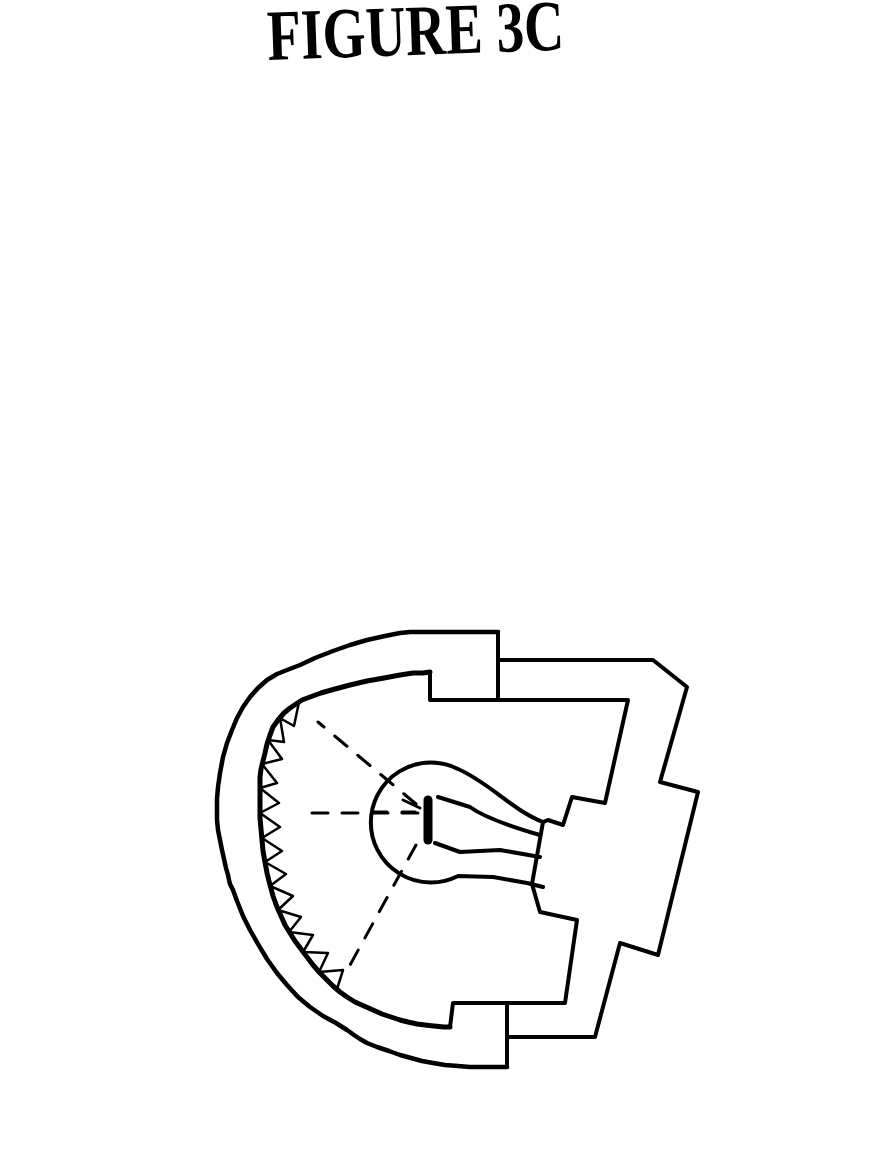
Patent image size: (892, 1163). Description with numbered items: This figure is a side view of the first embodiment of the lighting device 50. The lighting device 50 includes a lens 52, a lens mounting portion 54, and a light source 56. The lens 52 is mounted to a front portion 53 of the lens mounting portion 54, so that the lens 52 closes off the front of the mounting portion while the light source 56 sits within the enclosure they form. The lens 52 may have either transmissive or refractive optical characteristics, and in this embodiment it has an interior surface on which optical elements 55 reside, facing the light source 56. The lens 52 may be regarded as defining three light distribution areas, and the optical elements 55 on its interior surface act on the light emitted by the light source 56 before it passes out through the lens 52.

The lighting device 50 is at (608, 535).
The lens 52 is at (210, 832).
The front portion 53 is at (500, 650).
The lens mounting portion 54 is at (580, 650).
The optical elements 55 is at (345, 977).
The light source 56 is at (487, 780).